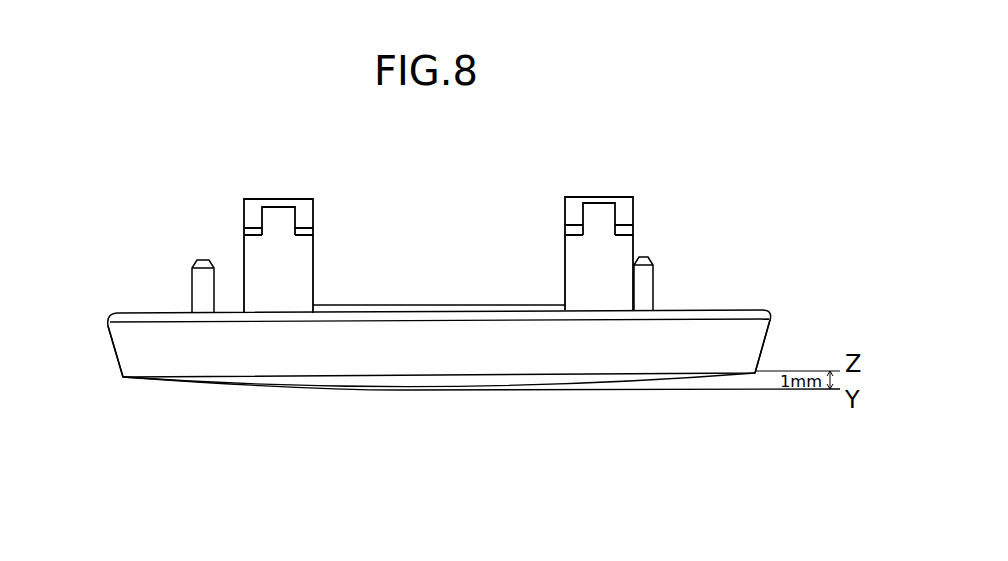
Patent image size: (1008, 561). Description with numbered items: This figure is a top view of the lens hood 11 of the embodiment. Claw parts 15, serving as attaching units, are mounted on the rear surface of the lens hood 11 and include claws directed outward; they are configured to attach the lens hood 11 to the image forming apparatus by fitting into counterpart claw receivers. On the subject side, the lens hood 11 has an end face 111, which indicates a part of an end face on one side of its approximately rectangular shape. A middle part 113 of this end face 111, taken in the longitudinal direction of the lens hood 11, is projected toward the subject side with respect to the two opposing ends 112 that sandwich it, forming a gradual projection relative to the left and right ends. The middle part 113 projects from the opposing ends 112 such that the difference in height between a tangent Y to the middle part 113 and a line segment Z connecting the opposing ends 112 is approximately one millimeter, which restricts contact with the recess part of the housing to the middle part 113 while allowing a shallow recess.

The lens hood 11 is at (150, 368).
The end face 111 is at (272, 387).
The opposing ends 112 is at (122, 378).
The middle part 113 is at (443, 390).
The claw parts 15 is at (570, 213).